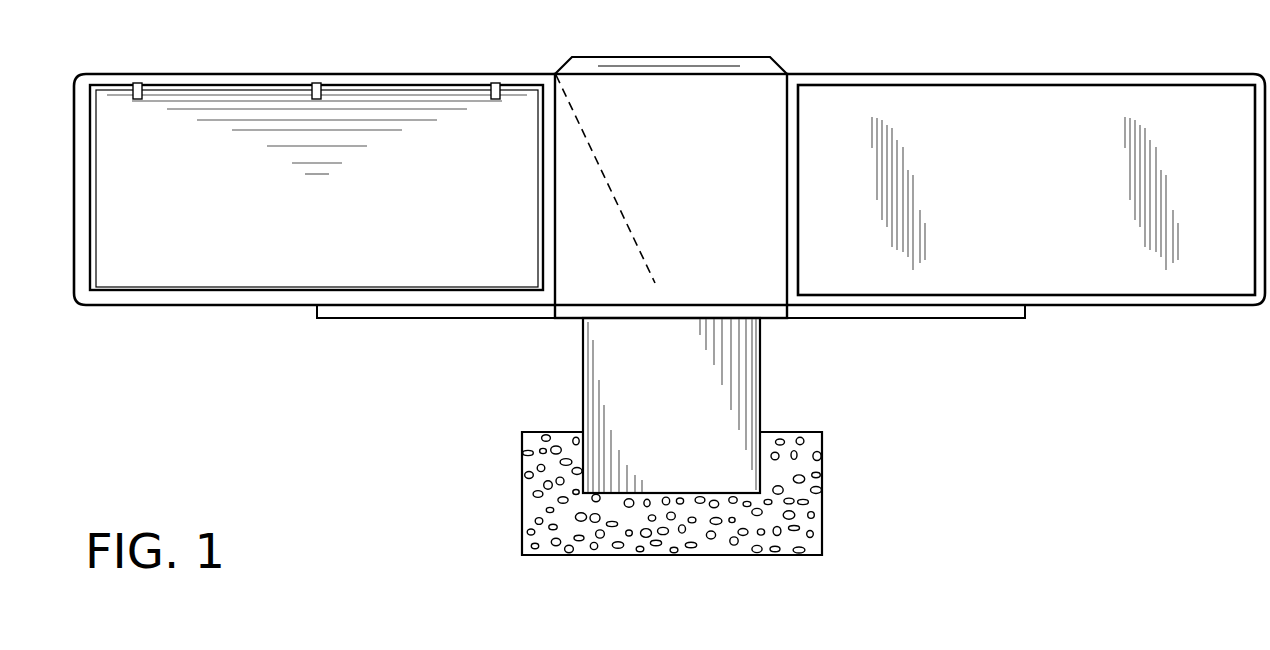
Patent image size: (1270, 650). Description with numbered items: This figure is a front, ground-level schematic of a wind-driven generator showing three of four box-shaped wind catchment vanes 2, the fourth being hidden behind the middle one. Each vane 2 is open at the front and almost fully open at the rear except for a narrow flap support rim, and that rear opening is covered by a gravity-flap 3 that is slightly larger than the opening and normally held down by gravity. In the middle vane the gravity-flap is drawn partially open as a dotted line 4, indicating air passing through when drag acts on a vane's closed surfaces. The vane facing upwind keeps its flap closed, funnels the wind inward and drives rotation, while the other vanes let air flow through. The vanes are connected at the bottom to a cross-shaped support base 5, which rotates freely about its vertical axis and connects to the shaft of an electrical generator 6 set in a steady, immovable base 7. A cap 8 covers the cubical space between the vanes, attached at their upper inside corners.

The wind catchment vane 2 is at (300, 75).
The gravity-flap 3 is at (692, 192).
The dotted line 4 is at (625, 297).
The cross-shaped support base 5 is at (878, 318).
The electrical generator 6 is at (583, 397).
The immovable base 7 is at (538, 520).
The cap 8 is at (645, 57).